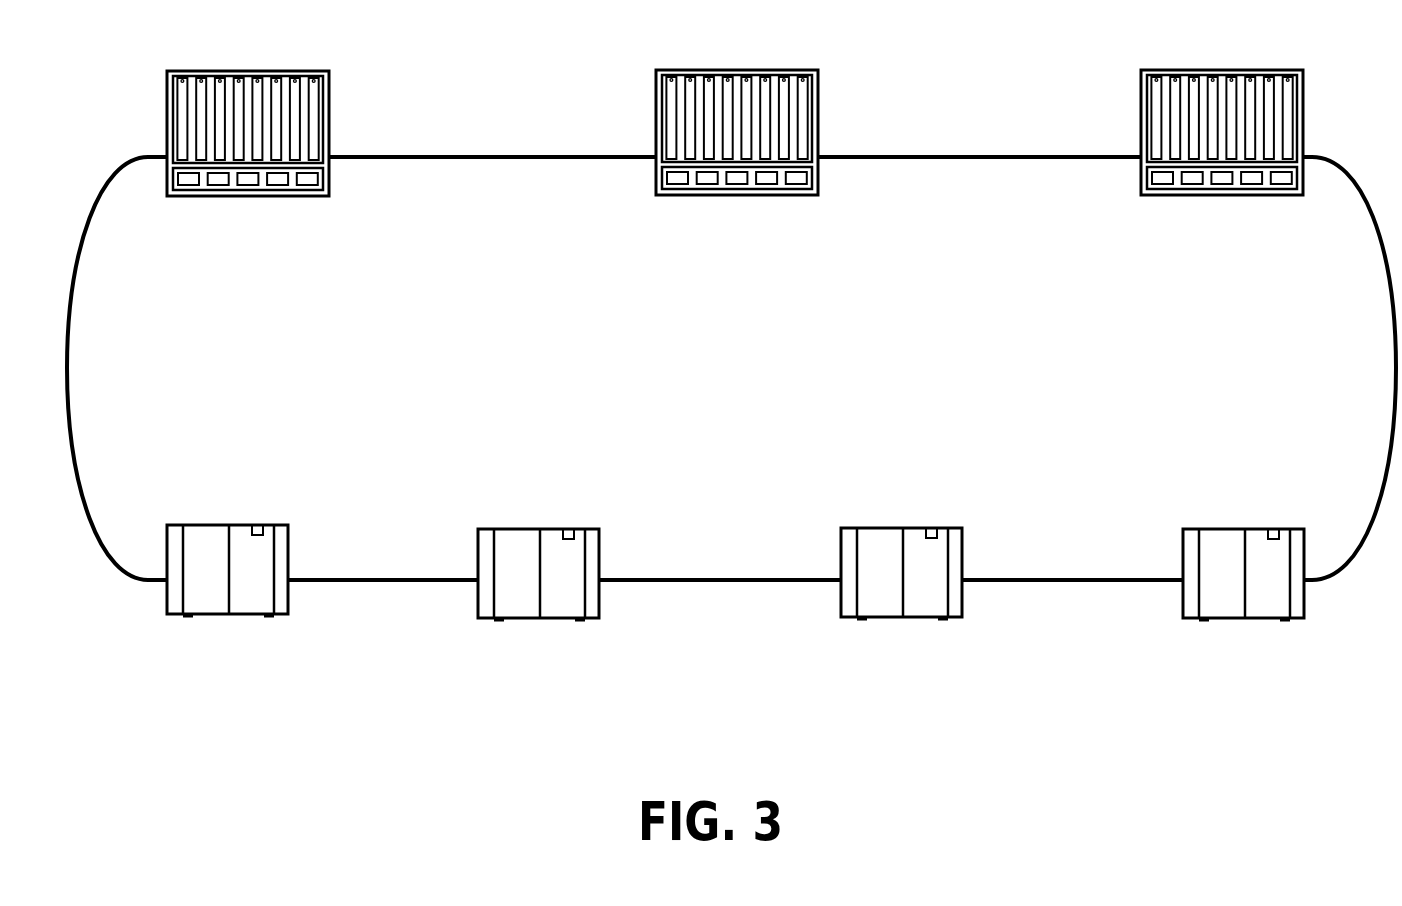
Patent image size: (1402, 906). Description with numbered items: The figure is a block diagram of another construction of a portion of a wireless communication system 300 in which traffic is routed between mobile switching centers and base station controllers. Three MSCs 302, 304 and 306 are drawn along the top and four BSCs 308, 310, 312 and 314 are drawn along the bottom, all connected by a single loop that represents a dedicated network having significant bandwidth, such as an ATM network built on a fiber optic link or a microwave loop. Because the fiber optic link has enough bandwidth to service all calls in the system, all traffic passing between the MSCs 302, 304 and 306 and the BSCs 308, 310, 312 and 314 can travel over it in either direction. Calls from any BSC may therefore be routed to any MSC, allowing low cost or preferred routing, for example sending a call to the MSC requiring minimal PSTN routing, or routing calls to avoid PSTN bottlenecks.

The wireless communication system 300 is at (995, 767).
The MSC 302 is at (288, 72).
The MSC 304 is at (767, 71).
The MSC 306 is at (1253, 70).
The BSC 308 is at (229, 525).
The BSC 310 is at (567, 529).
The BSC 312 is at (922, 528).
The BSC 314 is at (1243, 529).